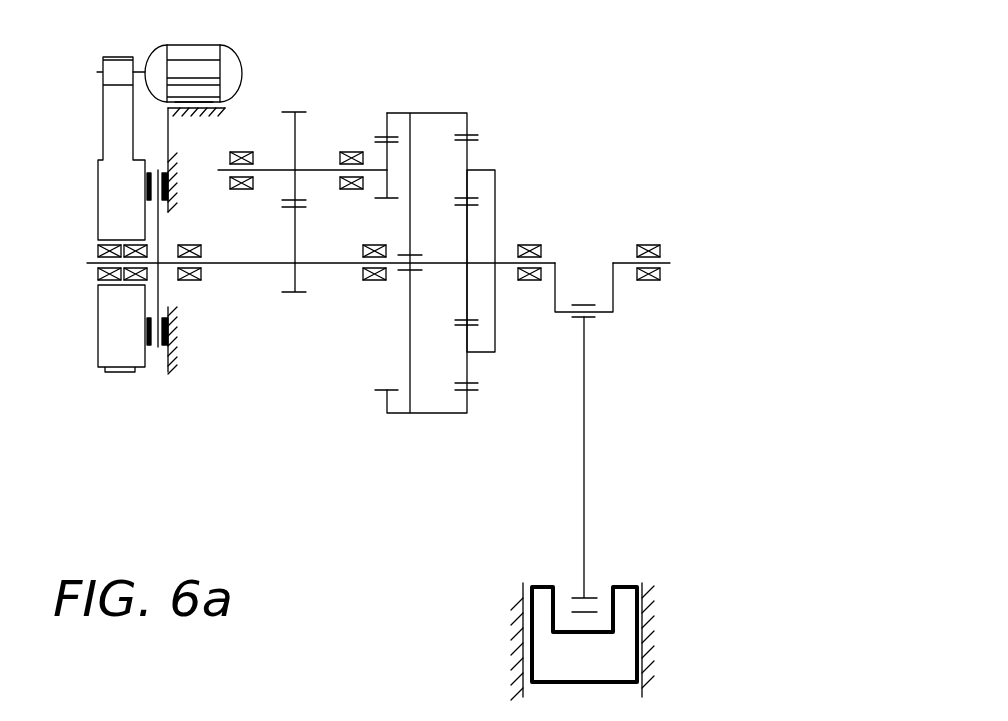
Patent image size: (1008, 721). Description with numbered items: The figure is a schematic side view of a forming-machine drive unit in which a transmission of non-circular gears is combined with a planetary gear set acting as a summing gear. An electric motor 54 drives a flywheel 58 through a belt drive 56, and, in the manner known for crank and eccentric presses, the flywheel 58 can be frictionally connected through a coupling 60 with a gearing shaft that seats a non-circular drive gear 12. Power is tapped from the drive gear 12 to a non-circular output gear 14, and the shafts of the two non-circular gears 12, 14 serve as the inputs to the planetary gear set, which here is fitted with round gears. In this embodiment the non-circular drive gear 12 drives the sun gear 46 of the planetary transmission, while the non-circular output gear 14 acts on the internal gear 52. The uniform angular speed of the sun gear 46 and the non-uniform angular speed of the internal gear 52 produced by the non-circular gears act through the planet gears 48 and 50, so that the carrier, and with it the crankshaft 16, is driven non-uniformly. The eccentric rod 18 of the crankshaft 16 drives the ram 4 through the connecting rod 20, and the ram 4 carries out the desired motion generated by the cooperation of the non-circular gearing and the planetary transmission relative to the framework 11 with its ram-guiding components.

The ram 4 is at (557, 588).
The framework 11 is at (648, 622).
The non-circular drive gear 12 is at (290, 273).
The non-circular output gear 14 is at (298, 140).
The crankshaft 16 is at (618, 260).
The eccentric rod 18 is at (612, 290).
The connecting rod 20 is at (585, 495).
The sun gear 46 is at (468, 232).
The planet gear 48 is at (468, 158).
The planet gear 50 is at (470, 368).
The internal gear 52 is at (436, 113).
The electric motor 54 is at (188, 80).
The belt drive 56 is at (102, 113).
The flywheel 58 is at (123, 338).
The coupling 60 is at (150, 345).